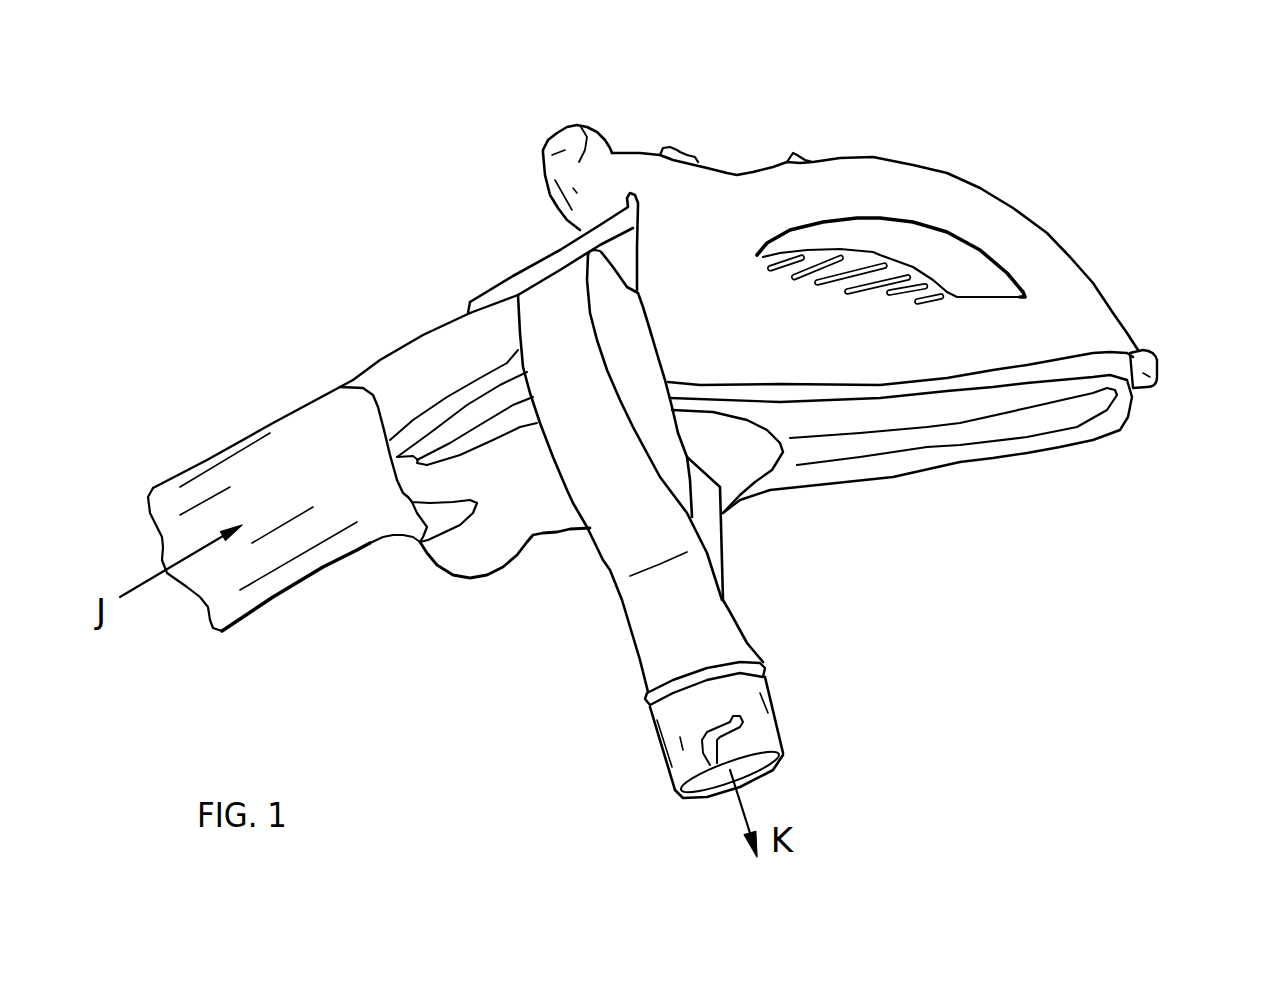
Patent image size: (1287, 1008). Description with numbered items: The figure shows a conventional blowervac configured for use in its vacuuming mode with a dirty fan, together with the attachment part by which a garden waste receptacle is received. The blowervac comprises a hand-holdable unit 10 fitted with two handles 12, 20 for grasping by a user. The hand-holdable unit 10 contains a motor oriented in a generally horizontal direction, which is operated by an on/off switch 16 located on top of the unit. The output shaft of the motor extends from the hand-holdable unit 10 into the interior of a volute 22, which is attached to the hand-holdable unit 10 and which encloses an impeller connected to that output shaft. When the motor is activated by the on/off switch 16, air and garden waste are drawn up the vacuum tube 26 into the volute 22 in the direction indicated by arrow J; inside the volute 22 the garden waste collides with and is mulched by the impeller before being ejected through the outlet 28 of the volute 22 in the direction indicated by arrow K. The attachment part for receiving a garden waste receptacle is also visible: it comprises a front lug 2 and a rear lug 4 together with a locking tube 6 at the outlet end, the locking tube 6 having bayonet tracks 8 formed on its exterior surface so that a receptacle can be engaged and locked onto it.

The front lug 2 is at (472, 548).
The rear lug 4 is at (1157, 378).
The locking tube 6 is at (753, 722).
The bayonet tracks 8 is at (703, 733).
The hand-holdable unit 10 is at (1023, 335).
The handle 12 is at (938, 208).
The on/off switch 16 is at (792, 158).
The handle 20 is at (585, 167).
The volute 22 is at (560, 307).
The vacuum tube 26 is at (292, 447).
The outlet 28 is at (700, 607).